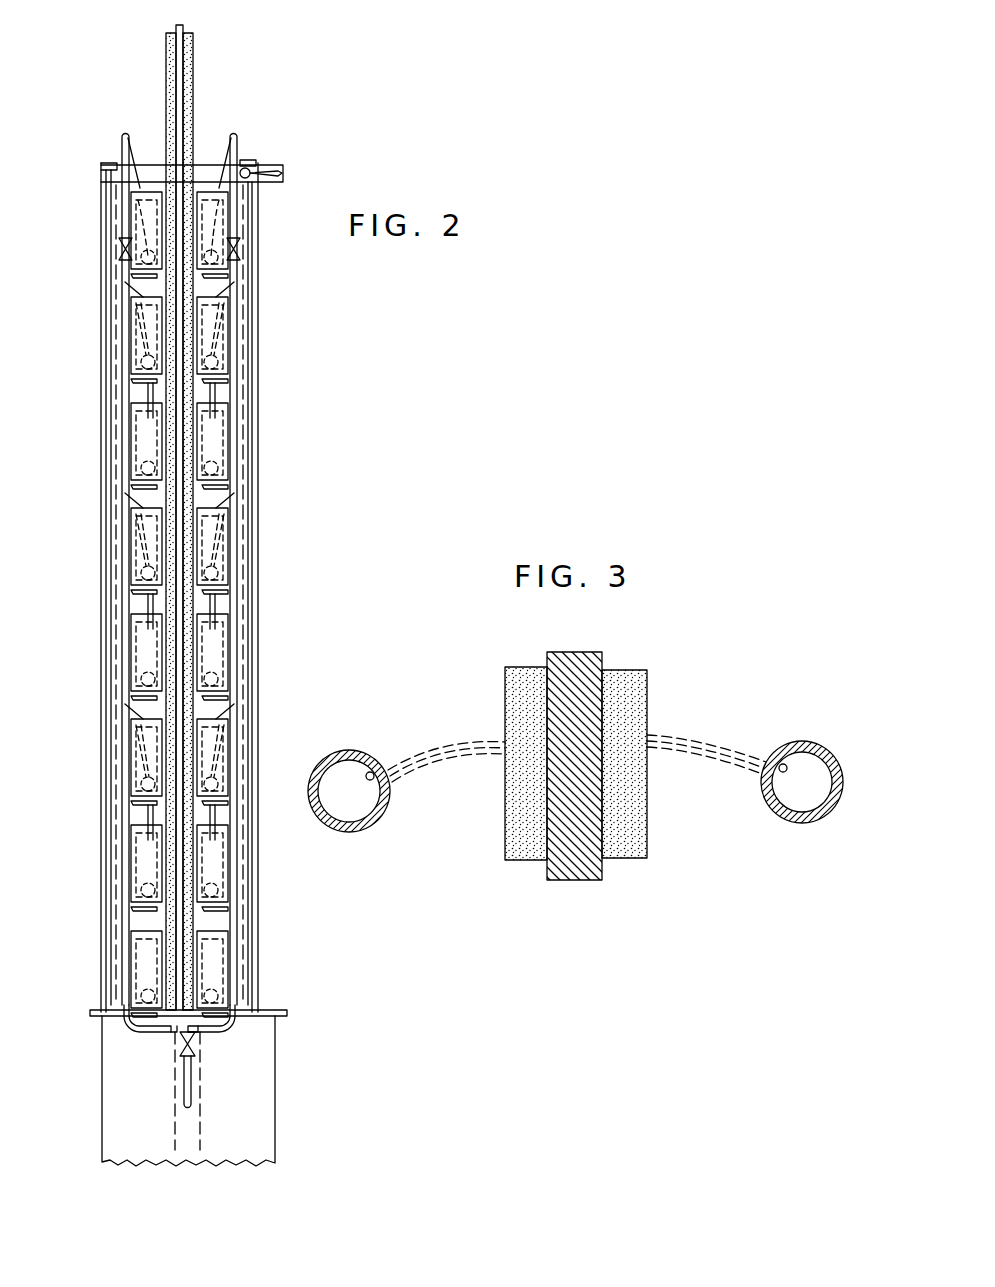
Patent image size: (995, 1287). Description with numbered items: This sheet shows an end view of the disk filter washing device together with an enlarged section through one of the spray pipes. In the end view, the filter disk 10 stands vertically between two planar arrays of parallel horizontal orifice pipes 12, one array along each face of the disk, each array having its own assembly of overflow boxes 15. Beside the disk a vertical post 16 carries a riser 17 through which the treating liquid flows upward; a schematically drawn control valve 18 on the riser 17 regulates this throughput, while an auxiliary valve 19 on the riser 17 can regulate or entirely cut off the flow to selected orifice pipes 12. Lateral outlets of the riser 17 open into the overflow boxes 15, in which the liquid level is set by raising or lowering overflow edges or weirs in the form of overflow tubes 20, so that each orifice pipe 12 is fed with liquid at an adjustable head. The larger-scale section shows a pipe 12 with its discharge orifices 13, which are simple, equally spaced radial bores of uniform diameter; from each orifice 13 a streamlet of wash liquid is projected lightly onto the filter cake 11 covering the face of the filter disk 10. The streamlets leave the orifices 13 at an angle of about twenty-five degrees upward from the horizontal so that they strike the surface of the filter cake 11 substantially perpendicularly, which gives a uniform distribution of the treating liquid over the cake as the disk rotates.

In FIG. 2, the filter disk 10 is at (183, 27).
In FIG. 2, the filter cake 11 is at (170, 80).
In FIG. 3, the filter cake 11 is at (505, 700).
In FIG. 2, the orifice pipes 12 is at (215, 356).
In FIG. 3, the orifice pipes 12 is at (378, 812).
In FIG. 3, the discharge orifices 13 is at (370, 774).
In FIG. 2, the overflow boxes 15 is at (118, 197).
In FIG. 2, the vertical post 16 is at (106, 910).
In FIG. 2, the riser 17 is at (128, 650).
In FIG. 2, the control valve 18 is at (185, 1046).
In FIG. 2, the auxiliary valve 19 is at (120, 250).
In FIG. 2, the overflow tubes 20 is at (215, 380).